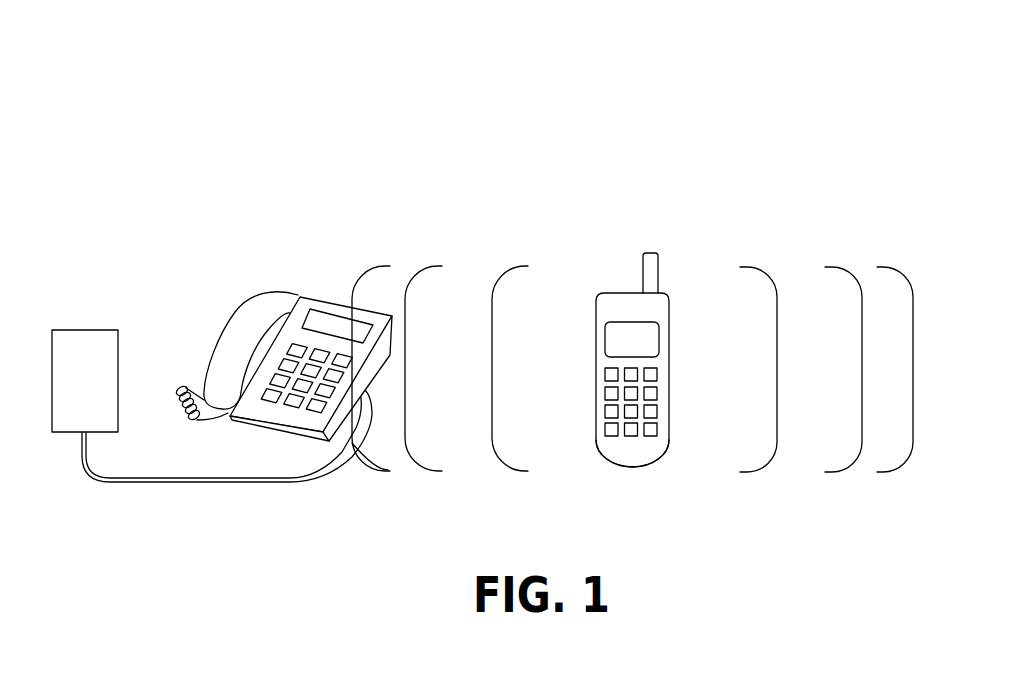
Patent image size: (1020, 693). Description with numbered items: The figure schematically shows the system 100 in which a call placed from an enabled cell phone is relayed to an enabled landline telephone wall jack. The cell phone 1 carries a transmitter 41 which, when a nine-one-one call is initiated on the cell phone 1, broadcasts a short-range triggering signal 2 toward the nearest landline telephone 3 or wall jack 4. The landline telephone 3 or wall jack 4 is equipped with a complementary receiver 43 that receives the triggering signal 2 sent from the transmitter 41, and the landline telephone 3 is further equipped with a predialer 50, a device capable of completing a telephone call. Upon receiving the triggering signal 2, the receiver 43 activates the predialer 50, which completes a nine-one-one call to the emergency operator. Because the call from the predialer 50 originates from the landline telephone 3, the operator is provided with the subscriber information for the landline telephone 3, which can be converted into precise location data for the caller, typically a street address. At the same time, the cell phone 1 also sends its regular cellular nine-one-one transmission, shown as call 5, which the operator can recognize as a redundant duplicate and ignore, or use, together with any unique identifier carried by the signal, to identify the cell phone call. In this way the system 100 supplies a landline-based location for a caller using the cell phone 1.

The system 100 is at (495, 80).
The cell phone 1 is at (605, 353).
The triggering signal 2 is at (442, 318).
The landline telephone 3 is at (300, 279).
The wall jack 4 is at (93, 330).
The call 5 is at (807, 283).
The transmitter 41 is at (617, 447).
The receiver 43 is at (378, 318).
The predialer 50 is at (372, 428).